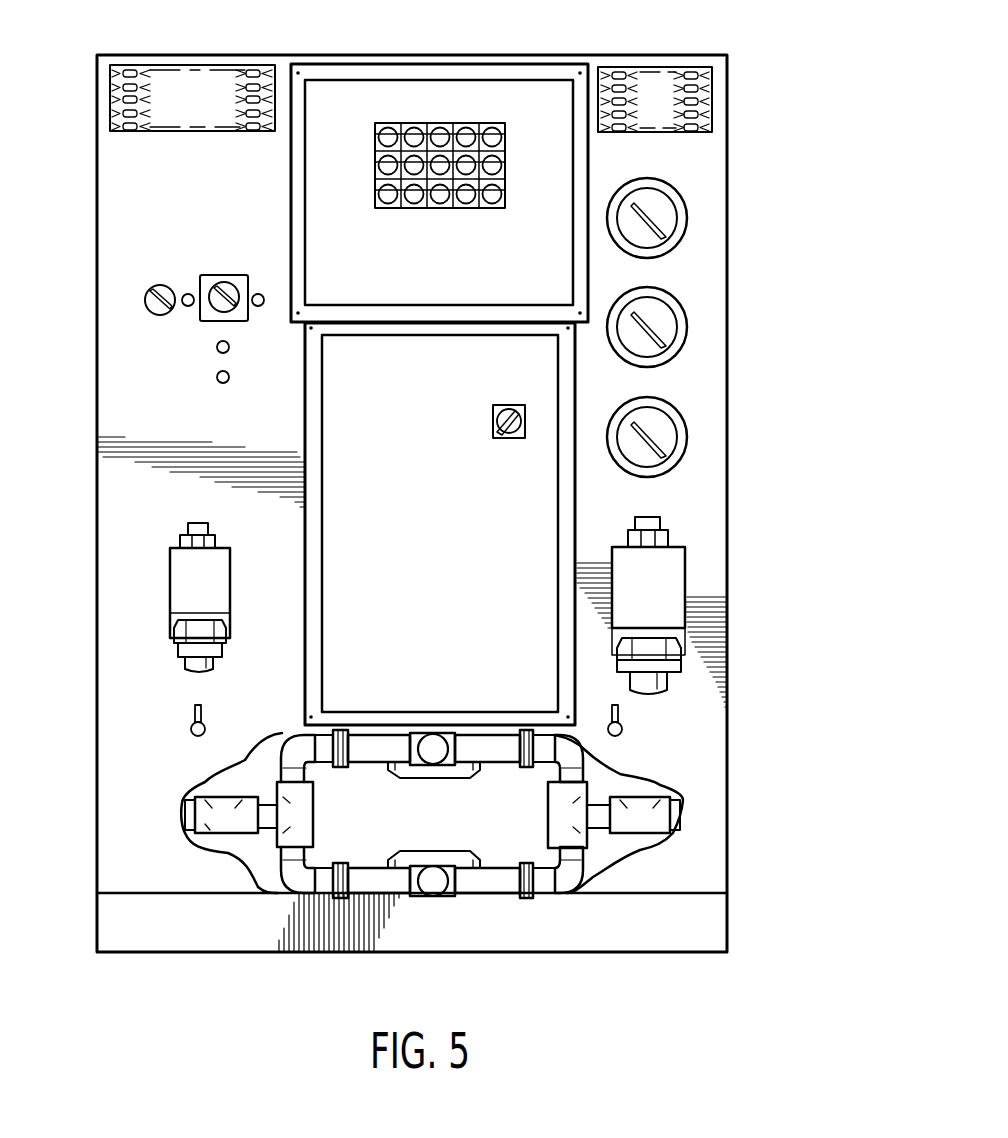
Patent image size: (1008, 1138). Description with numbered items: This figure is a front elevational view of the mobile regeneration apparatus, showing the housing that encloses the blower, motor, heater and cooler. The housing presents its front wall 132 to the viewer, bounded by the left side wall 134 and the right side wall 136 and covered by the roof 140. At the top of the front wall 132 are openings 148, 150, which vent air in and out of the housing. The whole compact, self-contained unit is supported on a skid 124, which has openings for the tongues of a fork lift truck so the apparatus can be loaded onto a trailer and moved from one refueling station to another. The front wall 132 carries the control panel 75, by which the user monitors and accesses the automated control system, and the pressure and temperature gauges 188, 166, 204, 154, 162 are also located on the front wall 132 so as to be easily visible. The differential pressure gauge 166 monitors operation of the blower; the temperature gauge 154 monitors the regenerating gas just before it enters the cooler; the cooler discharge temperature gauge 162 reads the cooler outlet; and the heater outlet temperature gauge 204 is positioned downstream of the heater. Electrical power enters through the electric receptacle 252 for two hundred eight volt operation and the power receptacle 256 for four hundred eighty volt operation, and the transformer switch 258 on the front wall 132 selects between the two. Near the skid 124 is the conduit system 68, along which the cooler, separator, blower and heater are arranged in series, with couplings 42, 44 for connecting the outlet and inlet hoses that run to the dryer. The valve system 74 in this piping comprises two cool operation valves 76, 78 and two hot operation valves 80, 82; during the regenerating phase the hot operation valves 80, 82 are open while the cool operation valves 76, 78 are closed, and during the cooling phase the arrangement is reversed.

The coupling 42 is at (440, 860).
The coupling 44 is at (430, 765).
The conduit system 68 is at (218, 822).
The valve system 74 is at (186, 776).
The control panel 75 is at (468, 208).
The cool operation valve 76 is at (378, 762).
The cool operation valve 78 is at (492, 893).
The hot operation valve 80 is at (372, 880).
The hot operation valve 82 is at (497, 762).
The skid 124 is at (620, 940).
The front wall 132 is at (166, 407).
The left side wall 134 is at (97, 230).
The right side wall 136 is at (727, 183).
The roof 140 is at (322, 56).
The opening 148 is at (133, 132).
The opening 150 is at (715, 112).
The temperature gauge 154 is at (690, 327).
The cooler discharge temperature gauge 162 is at (680, 465).
The differential pressure gauge 166 is at (240, 321).
The pressure gauge 188 is at (160, 287).
The heater outlet temperature gauge 204 is at (690, 218).
The electric receptacle 252 is at (688, 592).
The power receptacle 256 is at (185, 527).
The transformer switch 258 is at (508, 441).